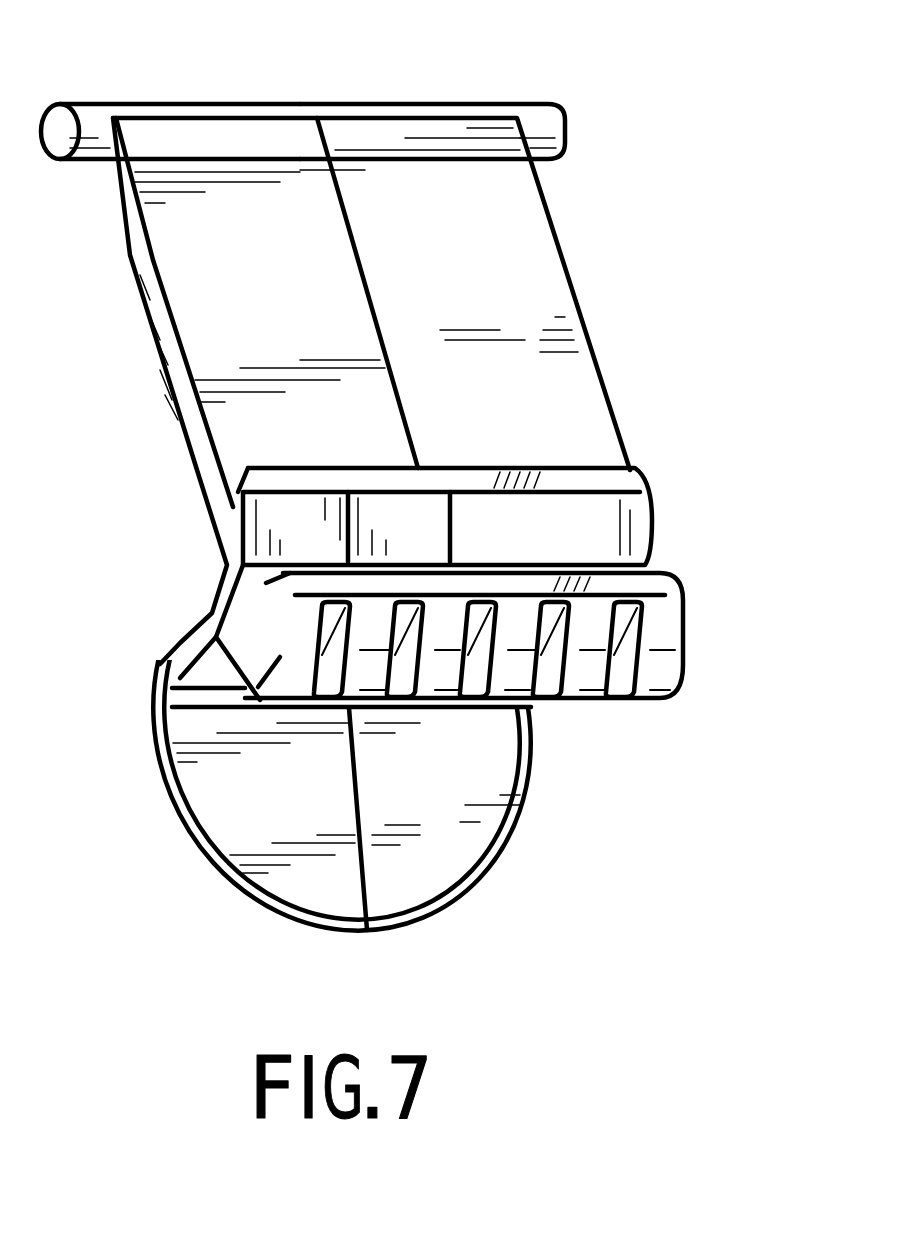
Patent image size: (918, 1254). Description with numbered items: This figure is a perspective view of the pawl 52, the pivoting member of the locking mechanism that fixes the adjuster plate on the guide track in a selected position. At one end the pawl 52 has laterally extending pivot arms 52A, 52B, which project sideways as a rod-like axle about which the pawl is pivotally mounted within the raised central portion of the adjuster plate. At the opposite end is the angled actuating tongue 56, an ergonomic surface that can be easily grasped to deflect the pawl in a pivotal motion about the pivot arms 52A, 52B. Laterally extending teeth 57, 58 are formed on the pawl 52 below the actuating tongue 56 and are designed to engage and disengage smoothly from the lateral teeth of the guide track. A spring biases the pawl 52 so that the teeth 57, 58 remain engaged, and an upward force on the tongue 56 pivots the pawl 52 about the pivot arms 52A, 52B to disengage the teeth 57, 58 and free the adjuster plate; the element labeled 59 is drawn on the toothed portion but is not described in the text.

The pawl 52 is at (628, 318).
The pivot arm 52A is at (72, 118).
The pivot arm 52B is at (556, 128).
The angled actuating tongue 56 is at (478, 842).
The laterally extending tooth 57 is at (615, 518).
The laterally extending tooth 58 is at (653, 577).
The teeth 59 is at (673, 674).